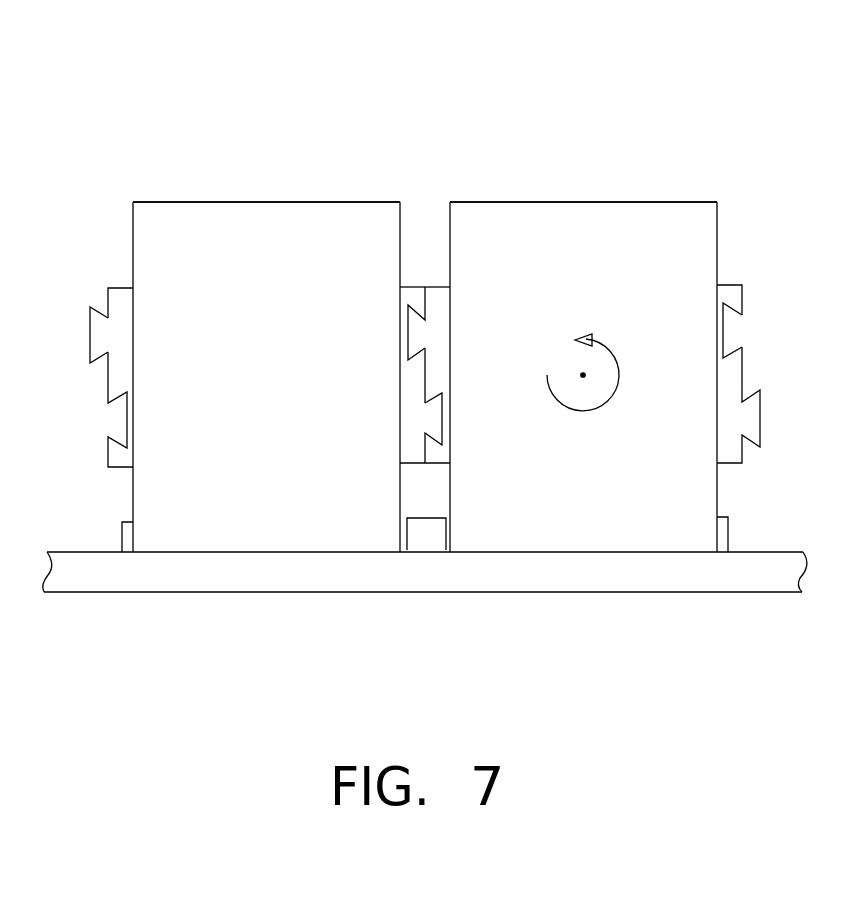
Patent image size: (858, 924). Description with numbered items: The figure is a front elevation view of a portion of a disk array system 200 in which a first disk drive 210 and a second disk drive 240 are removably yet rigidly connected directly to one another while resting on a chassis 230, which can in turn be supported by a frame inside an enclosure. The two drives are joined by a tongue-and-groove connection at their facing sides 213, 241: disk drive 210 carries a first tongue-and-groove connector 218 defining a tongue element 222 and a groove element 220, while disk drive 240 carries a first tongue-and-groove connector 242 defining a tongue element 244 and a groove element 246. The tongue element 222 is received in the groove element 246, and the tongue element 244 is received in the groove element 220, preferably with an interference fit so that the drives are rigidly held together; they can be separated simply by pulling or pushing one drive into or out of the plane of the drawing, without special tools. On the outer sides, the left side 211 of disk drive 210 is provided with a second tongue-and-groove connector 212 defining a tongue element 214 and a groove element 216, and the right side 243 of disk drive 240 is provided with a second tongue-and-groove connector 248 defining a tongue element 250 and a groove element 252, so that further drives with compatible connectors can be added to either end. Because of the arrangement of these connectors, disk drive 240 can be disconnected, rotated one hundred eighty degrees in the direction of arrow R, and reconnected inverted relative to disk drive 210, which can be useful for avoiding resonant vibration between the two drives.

The disk array system 200 is at (363, 72).
The first disk drive 210 is at (253, 200).
The left side wall of first lens holder 211 is at (133, 222).
The second tongue-and-groove connector 212 is at (118, 290).
The right side wall of first lens holder 213 is at (403, 216).
The tongue element 214 is at (98, 342).
The groove element 216 is at (123, 418).
The first tongue-and-groove connector 218 is at (412, 290).
The groove element 220 is at (408, 331).
The tongue element 222 is at (430, 415).
The chassis 230 is at (270, 585).
The second disk drive 240 is at (572, 200).
The left side wall of second lens holder 241 is at (449, 216).
The first tongue-and-groove connector 242 is at (437, 290).
The right side wall of second lens holder 243 is at (712, 231).
The tongue element 244 is at (415, 332).
The groove element 246 is at (445, 425).
The second tongue-and-groove connector 248 is at (740, 292).
The tongue element 250 is at (755, 415).
The groove element 252 is at (728, 333).